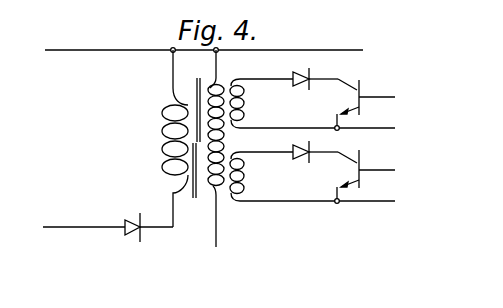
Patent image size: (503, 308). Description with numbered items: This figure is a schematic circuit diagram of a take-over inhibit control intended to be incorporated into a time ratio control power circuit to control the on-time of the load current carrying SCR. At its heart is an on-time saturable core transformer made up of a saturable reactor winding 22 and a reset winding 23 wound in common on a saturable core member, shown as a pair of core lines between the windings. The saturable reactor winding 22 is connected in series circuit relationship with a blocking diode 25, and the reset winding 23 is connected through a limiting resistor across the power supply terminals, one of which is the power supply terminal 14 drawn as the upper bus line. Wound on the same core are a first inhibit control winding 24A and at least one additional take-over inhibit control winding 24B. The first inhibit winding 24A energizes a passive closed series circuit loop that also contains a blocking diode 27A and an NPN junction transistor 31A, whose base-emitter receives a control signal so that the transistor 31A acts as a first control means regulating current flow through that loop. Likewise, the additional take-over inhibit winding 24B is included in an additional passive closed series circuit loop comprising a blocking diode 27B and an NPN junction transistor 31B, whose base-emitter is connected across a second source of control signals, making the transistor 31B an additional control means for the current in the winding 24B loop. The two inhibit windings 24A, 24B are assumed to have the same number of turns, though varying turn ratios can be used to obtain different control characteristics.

The power supply terminal 14 is at (79, 49).
The saturable reactor winding 22 is at (165, 113).
The reset winding 23 is at (207, 199).
The blocking diode 25 is at (128, 238).
The first inhibit control winding 24A is at (246, 102).
The additional take-over inhibit control winding 24B is at (246, 177).
The blocking diode 27A is at (311, 74).
The blocking diode 27B is at (311, 166).
The NPN junction transistor 31A is at (362, 85).
The NPN junction transistor 31B is at (362, 161).